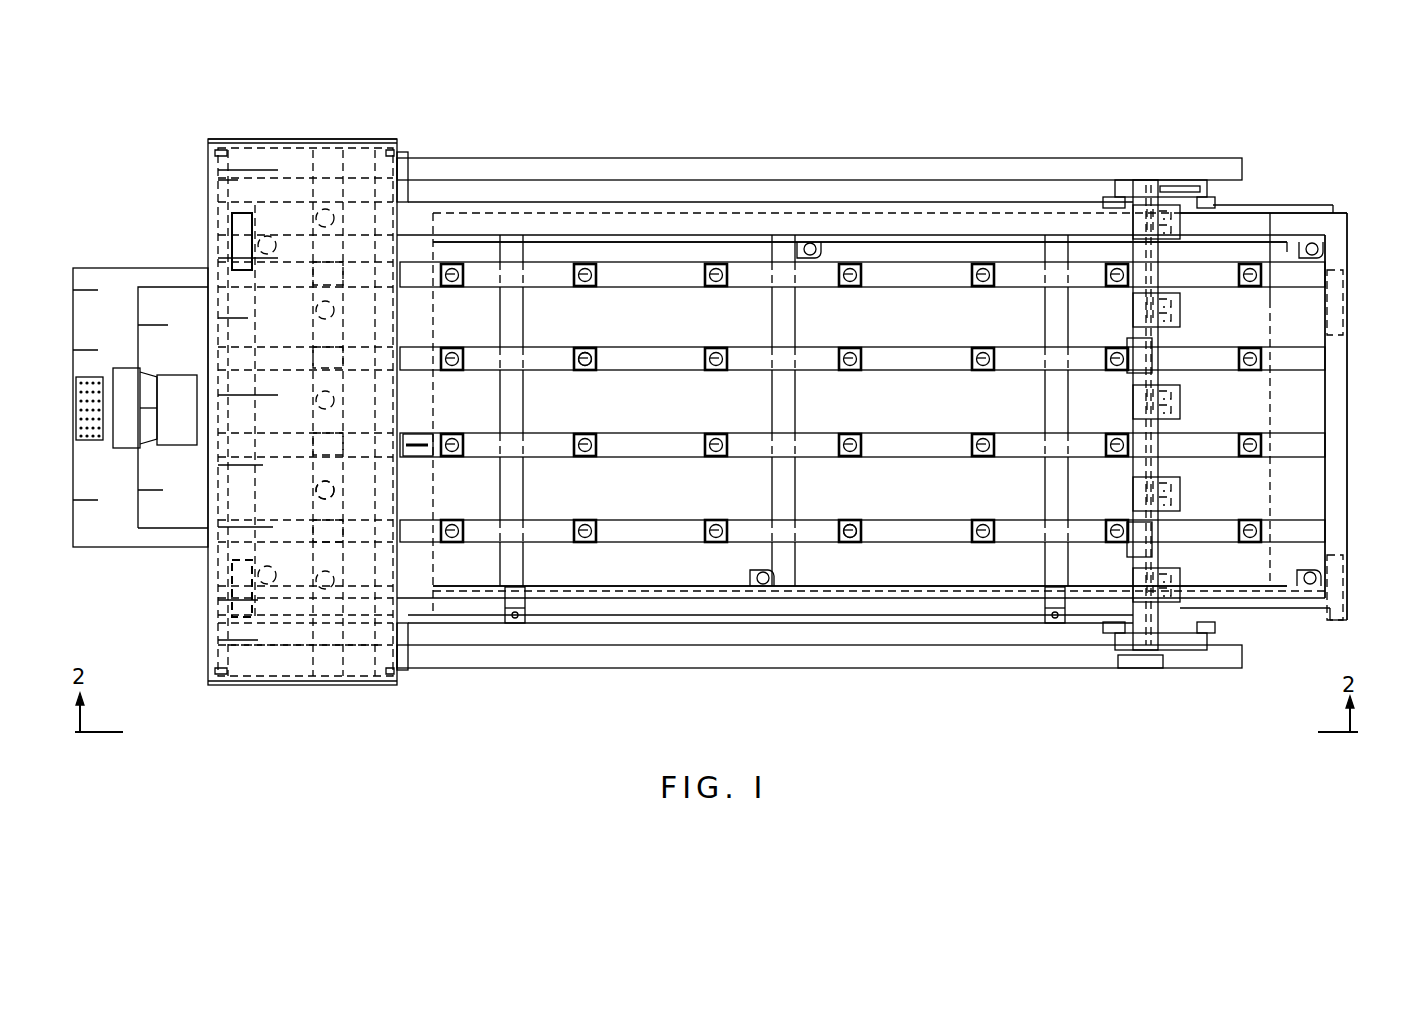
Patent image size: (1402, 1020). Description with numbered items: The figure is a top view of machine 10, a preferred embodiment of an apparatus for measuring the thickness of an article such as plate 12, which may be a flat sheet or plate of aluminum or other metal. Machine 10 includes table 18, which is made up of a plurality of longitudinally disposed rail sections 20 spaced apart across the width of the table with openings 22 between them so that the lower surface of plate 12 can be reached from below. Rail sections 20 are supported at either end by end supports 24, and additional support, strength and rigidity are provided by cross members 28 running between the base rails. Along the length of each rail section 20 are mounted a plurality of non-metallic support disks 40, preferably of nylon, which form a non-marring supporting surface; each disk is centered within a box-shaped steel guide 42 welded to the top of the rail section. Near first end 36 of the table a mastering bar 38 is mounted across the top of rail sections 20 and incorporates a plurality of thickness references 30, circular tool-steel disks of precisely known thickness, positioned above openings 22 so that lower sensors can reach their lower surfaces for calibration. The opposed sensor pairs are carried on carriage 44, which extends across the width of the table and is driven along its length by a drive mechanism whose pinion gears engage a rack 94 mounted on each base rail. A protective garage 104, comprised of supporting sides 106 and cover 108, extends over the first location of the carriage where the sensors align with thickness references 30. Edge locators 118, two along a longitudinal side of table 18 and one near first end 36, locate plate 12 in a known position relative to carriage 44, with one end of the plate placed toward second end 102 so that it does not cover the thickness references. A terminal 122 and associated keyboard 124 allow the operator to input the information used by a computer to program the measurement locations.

The machine 10 is at (1062, 130).
The plate 12 is at (1270, 410).
The table 18 is at (1347, 213).
The rail sections 20 is at (893, 289).
The openings 22 is at (665, 260).
The end supports 24 is at (1338, 370).
The cross members 28 is at (797, 412).
The thickness references 30 is at (318, 313).
The first end 36 is at (208, 195).
The mastering bar 38 is at (312, 482).
The support disks 40 is at (580, 350).
The guides 42 is at (598, 352).
The carriage 44 is at (1130, 486).
The rack 94 is at (885, 242).
The second end 102 is at (1352, 456).
The protective garage 104 is at (248, 137).
The supporting sides 106 is at (370, 140).
The cover 108 is at (240, 648).
The edge locators 118 is at (436, 440).
The terminal 122 is at (128, 368).
The keyboard 124 is at (84, 440).